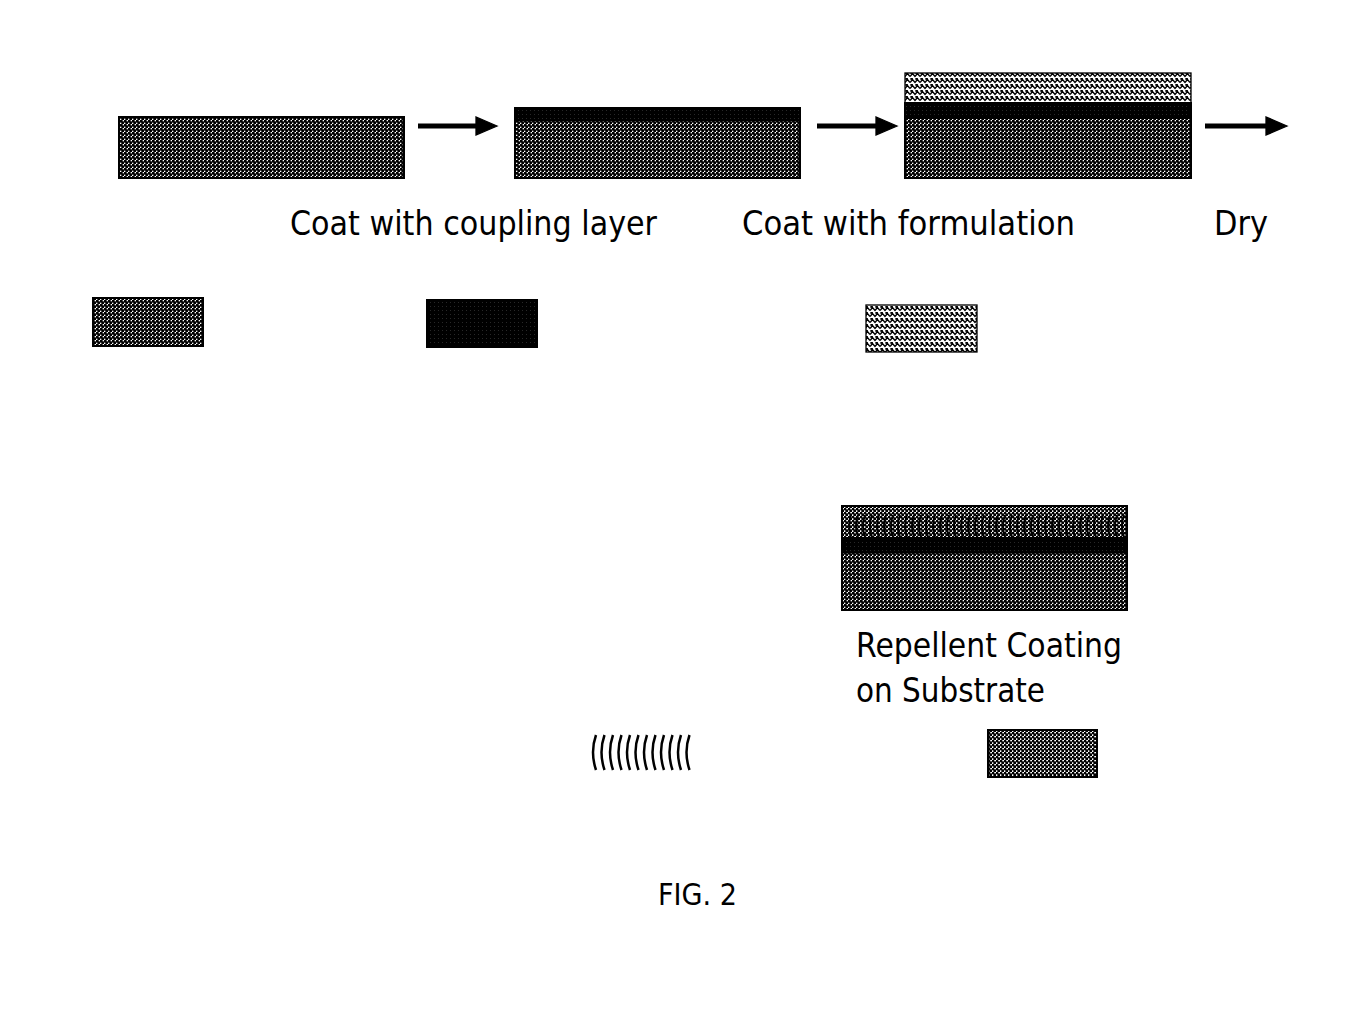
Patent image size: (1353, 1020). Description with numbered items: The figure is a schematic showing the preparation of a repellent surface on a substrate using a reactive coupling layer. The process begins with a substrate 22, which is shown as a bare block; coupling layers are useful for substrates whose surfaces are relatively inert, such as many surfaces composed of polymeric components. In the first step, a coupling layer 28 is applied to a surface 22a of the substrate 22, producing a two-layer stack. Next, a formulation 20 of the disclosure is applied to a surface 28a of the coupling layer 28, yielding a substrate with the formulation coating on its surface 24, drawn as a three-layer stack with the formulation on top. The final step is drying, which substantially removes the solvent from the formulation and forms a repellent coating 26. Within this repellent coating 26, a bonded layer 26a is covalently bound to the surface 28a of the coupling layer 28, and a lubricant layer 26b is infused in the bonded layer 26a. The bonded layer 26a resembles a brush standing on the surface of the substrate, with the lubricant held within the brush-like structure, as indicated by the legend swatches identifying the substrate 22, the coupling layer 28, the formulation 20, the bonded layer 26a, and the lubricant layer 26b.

The surface of the substrate 22a is at (229, 86).
The surface of the coupling layer 28a is at (589, 86).
The substrate with formulation coating on its surface 24 is at (1208, 89).
The repellent coating 26 is at (1152, 511).
The substrate 22 is at (246, 322).
The coupling layer 28 is at (616, 323).
The formulation 20 is at (1048, 328).
The bonded layer 26a is at (779, 753).
The lubricant layer 26b is at (1148, 753).